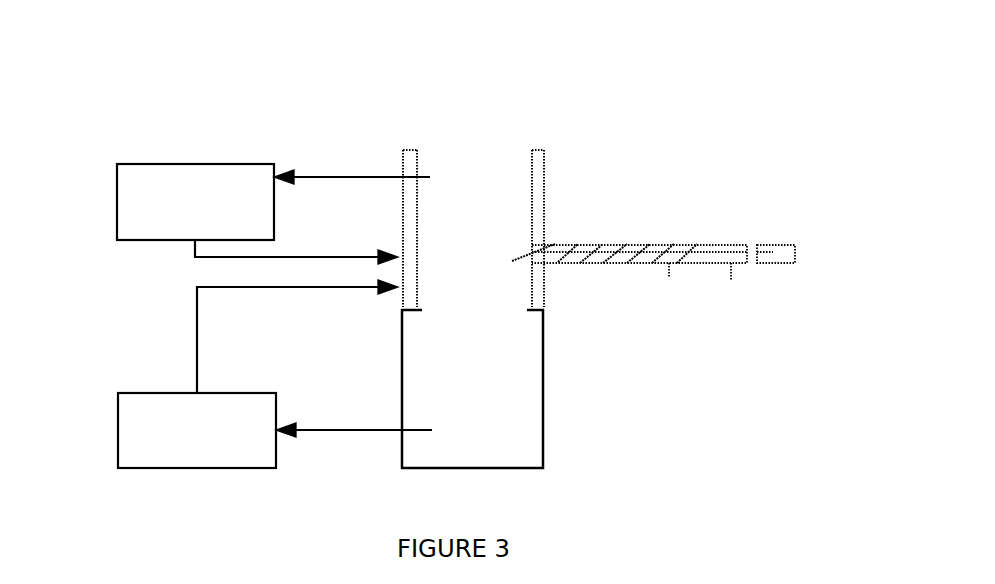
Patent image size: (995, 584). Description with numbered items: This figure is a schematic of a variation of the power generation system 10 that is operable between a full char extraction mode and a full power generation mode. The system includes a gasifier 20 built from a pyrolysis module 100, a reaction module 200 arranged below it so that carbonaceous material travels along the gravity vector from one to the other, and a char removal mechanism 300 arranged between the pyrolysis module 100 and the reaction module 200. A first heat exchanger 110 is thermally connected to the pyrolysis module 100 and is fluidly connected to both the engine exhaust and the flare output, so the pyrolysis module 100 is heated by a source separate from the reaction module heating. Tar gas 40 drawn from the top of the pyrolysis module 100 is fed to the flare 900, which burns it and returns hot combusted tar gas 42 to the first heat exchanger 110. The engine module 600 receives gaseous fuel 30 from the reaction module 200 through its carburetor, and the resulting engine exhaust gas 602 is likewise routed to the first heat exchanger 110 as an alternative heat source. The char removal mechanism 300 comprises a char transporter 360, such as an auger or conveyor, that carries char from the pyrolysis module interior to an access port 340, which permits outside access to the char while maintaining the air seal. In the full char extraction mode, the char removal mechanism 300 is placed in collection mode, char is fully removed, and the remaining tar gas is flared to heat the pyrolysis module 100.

The power generation system 10 is at (121, 60).
The gasifier 20 is at (409, 111).
The gaseous fuel 30 is at (383, 412).
The tar gas 40 is at (361, 156).
The hot combusted tar gas 42 is at (353, 236).
The pyrolysis module 100 is at (511, 182).
The first heat exchanger 110 is at (545, 212).
The reaction module 200 is at (525, 387).
The char removal mechanism 300 is at (753, 209).
The access port 340 is at (711, 300).
The char transporter 360 is at (650, 222).
The engine module 600 is at (136, 426).
The engine exhaust gas 602 is at (299, 309).
The flare 900 is at (121, 196).